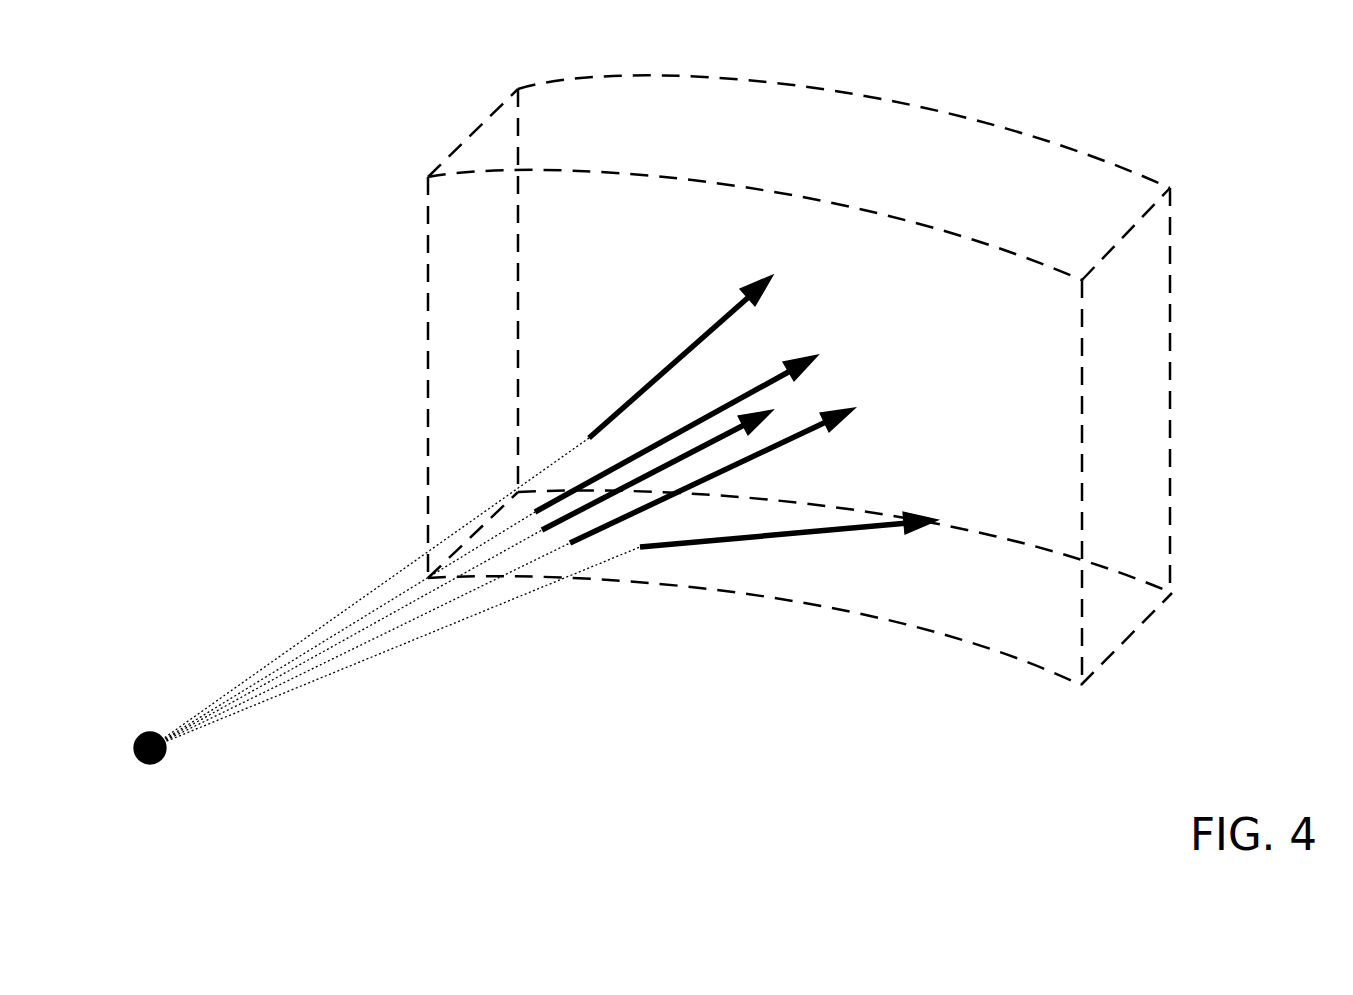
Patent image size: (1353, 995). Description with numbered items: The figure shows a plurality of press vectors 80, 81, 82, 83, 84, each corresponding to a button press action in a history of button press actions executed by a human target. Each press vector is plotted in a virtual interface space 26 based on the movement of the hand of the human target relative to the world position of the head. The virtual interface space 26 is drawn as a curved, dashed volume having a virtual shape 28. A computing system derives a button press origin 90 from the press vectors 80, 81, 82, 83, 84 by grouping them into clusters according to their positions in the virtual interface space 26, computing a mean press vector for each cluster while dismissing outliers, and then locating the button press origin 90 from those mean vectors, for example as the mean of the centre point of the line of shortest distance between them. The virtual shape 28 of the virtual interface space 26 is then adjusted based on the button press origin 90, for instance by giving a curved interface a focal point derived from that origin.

The virtual interface space 26 is at (995, 143).
The virtual shape 28 is at (720, 80).
The press vector 80 is at (757, 277).
The press vector 81 is at (802, 360).
The press vector 82 is at (757, 417).
The press vector 83 is at (837, 412).
The press vector 84 is at (920, 515).
The button press origin 90 is at (150, 727).